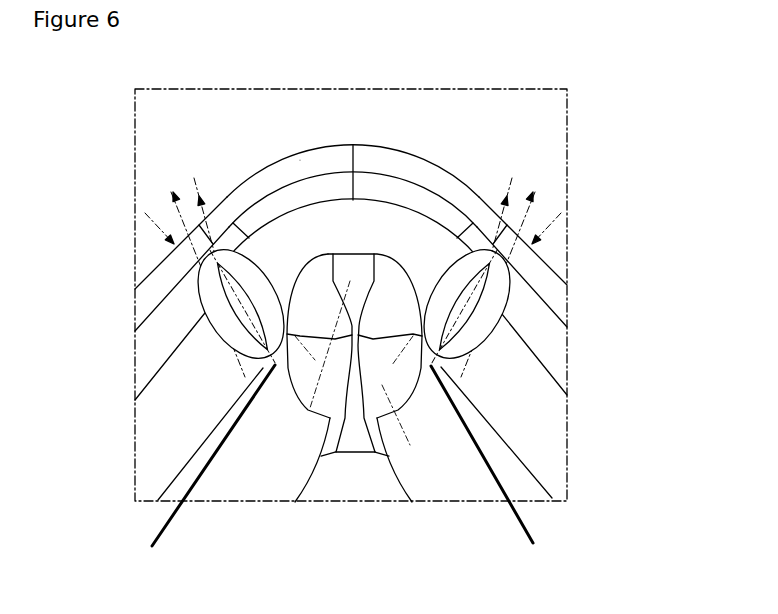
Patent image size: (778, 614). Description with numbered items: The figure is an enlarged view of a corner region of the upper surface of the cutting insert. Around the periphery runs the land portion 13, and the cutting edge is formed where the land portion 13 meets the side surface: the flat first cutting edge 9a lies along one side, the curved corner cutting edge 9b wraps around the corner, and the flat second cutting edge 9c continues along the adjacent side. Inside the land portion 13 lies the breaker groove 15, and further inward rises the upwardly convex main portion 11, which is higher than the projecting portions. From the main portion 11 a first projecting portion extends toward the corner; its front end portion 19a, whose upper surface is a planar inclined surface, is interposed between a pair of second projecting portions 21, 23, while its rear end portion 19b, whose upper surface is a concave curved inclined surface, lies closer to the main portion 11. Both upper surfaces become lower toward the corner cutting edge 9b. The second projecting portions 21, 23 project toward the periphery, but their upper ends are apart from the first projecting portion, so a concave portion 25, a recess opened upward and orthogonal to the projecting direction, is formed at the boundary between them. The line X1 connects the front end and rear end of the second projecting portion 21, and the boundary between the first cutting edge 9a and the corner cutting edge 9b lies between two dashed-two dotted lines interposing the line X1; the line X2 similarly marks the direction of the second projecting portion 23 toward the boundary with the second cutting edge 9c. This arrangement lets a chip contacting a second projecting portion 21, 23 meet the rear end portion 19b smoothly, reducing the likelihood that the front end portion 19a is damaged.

The first cutting edge 9a is at (553, 270).
The corner cutting edge 9b is at (330, 143).
The second cutting edge 9c is at (165, 260).
The land portion 13 is at (413, 163).
The breaker groove 15 is at (149, 423).
The second projecting portion 23 is at (223, 320).
The second projecting portion 21 is at (483, 322).
The concave portion 25 is at (338, 472).
The main portion 11 is at (353, 472).
The front end portion 19a is at (295, 408).
The rear end portion 19b is at (390, 415).
The line X1 is at (511, 274).
The direction X2 is at (195, 274).